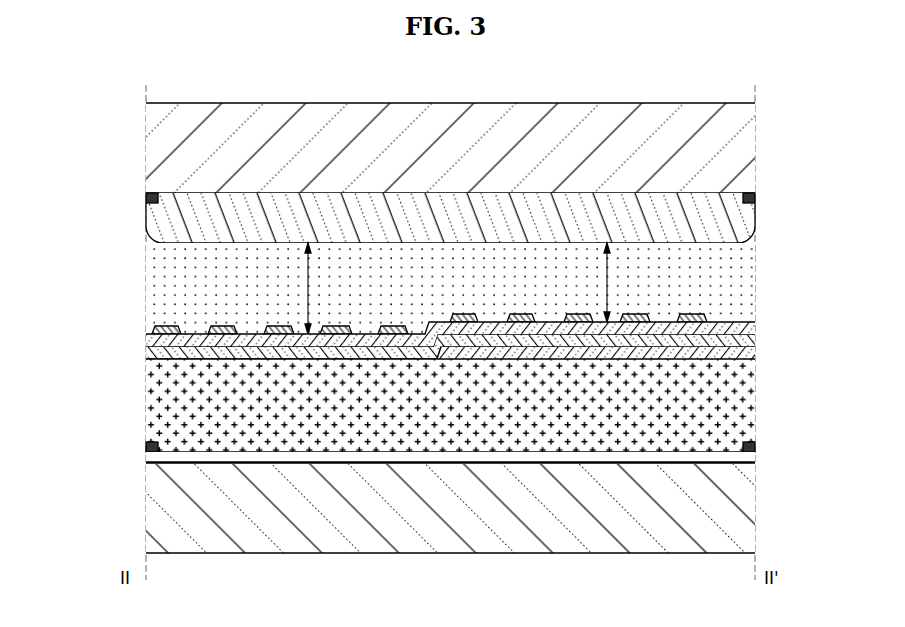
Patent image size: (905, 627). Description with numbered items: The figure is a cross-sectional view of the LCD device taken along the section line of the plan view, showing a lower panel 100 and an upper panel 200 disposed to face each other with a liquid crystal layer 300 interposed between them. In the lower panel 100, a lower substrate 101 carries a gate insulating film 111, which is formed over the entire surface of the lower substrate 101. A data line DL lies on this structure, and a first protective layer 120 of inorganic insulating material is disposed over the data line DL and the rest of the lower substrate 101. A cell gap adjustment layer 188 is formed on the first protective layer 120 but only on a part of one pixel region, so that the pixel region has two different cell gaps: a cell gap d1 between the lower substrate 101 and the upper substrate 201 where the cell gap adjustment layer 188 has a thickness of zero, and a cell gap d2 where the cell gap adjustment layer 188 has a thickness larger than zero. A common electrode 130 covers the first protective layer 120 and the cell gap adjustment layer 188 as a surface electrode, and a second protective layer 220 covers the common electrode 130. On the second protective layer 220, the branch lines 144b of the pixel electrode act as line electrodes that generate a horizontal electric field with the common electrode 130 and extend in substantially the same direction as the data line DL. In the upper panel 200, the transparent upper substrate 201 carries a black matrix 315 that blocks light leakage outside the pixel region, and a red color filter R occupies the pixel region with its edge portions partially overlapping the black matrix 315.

The upper panel 200 is at (450, 153).
The upper substrate 201 is at (161, 154).
The black matrix 315 is at (147, 198).
The red color filter R is at (450, 218).
The liquid crystal layer 300 is at (481, 288).
The cell gap d1 is at (322, 288).
The cell gap d2 is at (619, 282).
The lower panel 100 is at (443, 453).
The branch lines 144b is at (165, 325).
The second protective layer 220 is at (160, 340).
The common electrode 130 is at (160, 353).
The cell gap adjustment layer 188 is at (605, 352).
The first protective layer 120 is at (160, 400).
The data line DL is at (147, 447).
The gate insulating film 111 is at (343, 457).
The lower substrate 101 is at (160, 513).